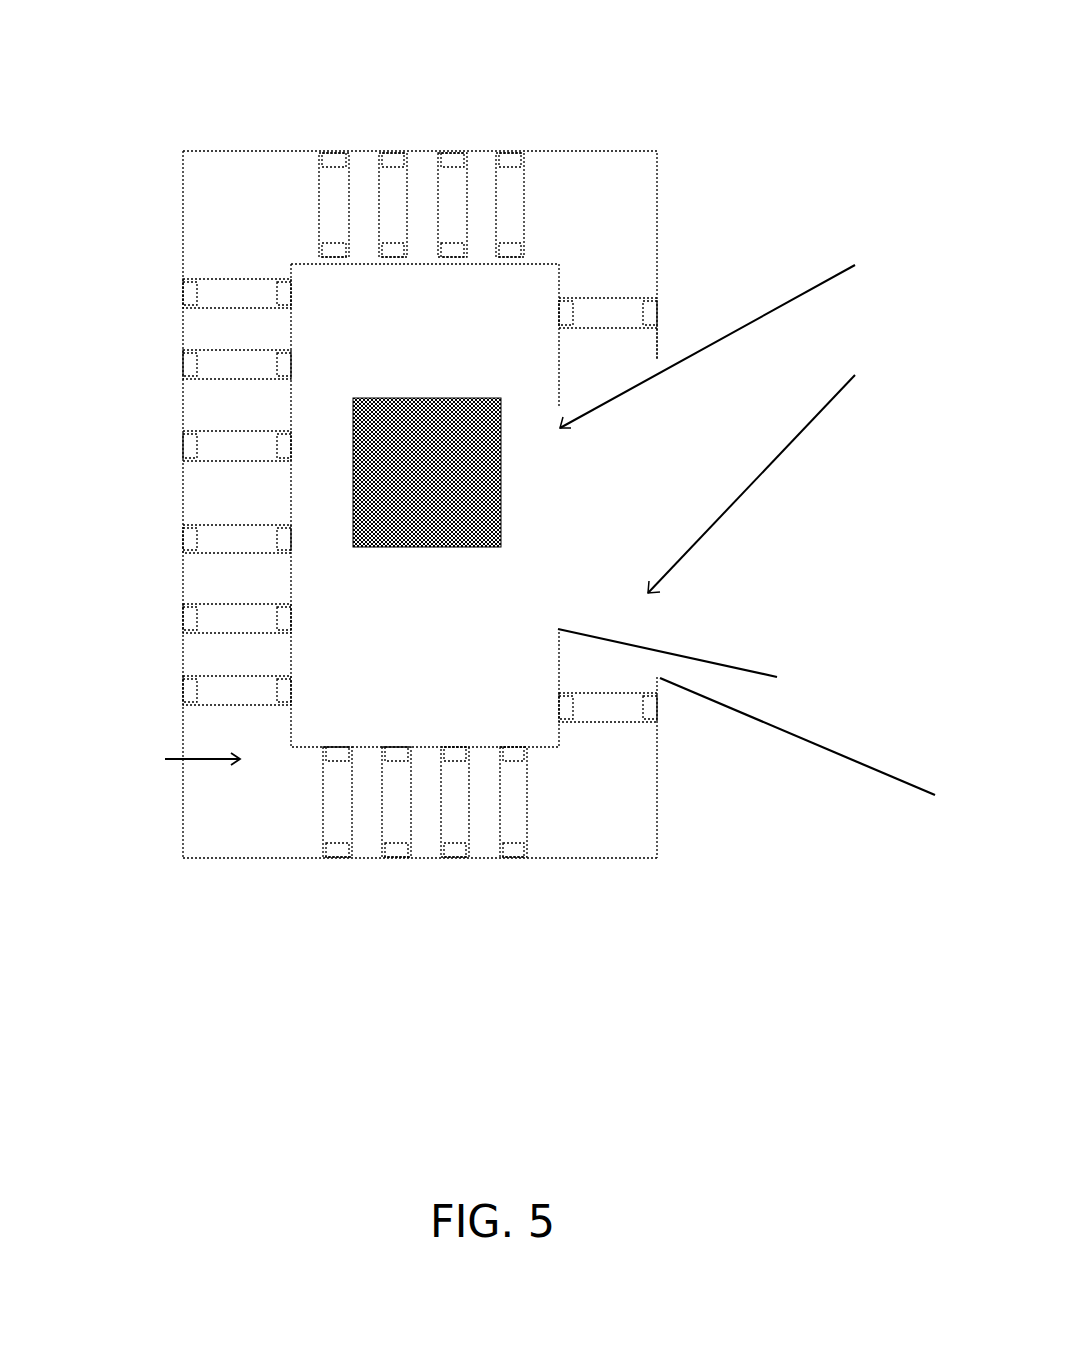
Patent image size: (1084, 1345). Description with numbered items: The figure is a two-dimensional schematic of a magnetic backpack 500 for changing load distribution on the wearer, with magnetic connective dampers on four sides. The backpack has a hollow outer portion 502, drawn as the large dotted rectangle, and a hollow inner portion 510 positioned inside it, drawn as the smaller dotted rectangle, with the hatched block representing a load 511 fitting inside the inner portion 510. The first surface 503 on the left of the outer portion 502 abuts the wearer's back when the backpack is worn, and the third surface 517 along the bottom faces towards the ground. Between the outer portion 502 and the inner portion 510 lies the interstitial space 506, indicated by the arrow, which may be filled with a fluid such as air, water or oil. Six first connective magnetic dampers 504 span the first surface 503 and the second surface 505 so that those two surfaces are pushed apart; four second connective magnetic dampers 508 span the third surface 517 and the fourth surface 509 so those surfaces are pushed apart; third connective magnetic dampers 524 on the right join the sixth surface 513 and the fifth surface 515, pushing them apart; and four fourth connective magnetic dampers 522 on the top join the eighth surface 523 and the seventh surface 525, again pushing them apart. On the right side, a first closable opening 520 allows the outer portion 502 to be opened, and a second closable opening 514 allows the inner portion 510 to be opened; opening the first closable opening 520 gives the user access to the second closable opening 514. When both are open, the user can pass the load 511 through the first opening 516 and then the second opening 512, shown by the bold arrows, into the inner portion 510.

The magnetic backpack 500 is at (870, 1145).
The outer portion 502 is at (183, 150).
The first surface 503 is at (183, 222).
The first connective magnetic dampers 504 is at (232, 303).
The second surface 505 is at (291, 490).
The interstitial space 506 is at (163, 762).
The second connective magnetic dampers 508 is at (323, 804).
The fourth surface 509 is at (372, 747).
The inner portion 510 is at (561, 262).
The load 511 is at (500, 398).
The second opening 512 is at (734, 340).
The sixth surface 513 is at (561, 281).
The second closable opening 514 is at (578, 632).
The fifth surface 515 is at (657, 343).
The first opening 516 is at (781, 476).
The third surface 517 is at (487, 858).
The first closable opening 520 is at (813, 743).
The fourth connective magnetic dampers 522 is at (319, 180).
The eighth surface 523 is at (369, 151).
The third connective magnetic dampers 524 is at (622, 722).
The seventh surface 525 is at (542, 262).